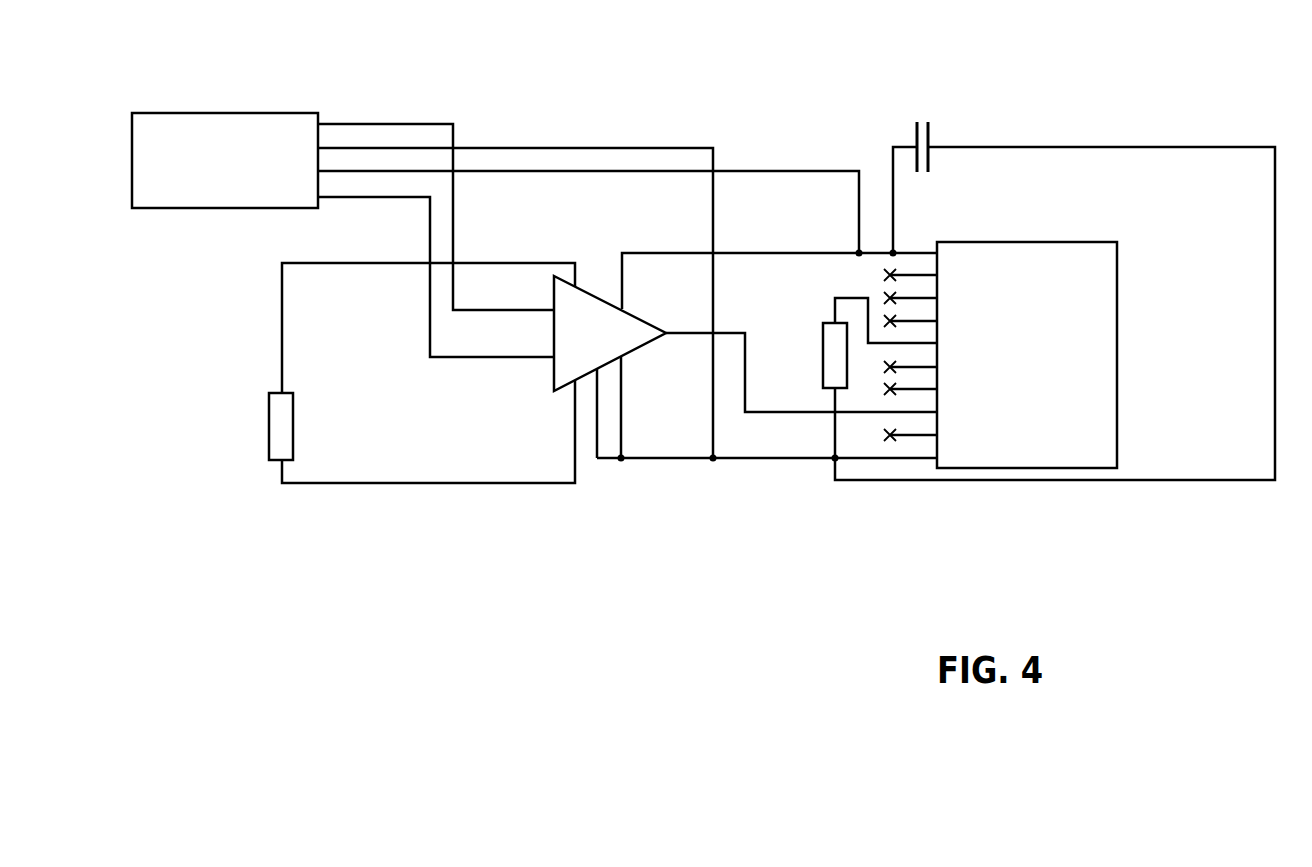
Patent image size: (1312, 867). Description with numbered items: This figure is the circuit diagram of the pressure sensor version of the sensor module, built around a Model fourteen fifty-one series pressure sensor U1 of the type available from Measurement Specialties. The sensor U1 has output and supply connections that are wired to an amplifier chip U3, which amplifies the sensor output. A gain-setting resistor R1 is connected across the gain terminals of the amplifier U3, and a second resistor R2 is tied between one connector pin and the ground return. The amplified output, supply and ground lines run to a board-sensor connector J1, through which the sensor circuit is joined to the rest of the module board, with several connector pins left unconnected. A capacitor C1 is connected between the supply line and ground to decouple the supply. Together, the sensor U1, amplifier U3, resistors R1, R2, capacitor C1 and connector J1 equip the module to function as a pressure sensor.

The 1451 pressure sensor U1 is at (212, 114).
The AD623 instrumentation amplifier U3 is at (569, 345).
The Twines board-sensor connector J1 is at (1053, 309).
The 0.1 uF capacitor C1 is at (938, 111).
The 56K resistor R1 is at (303, 481).
The 15K resistor R2 is at (826, 385).